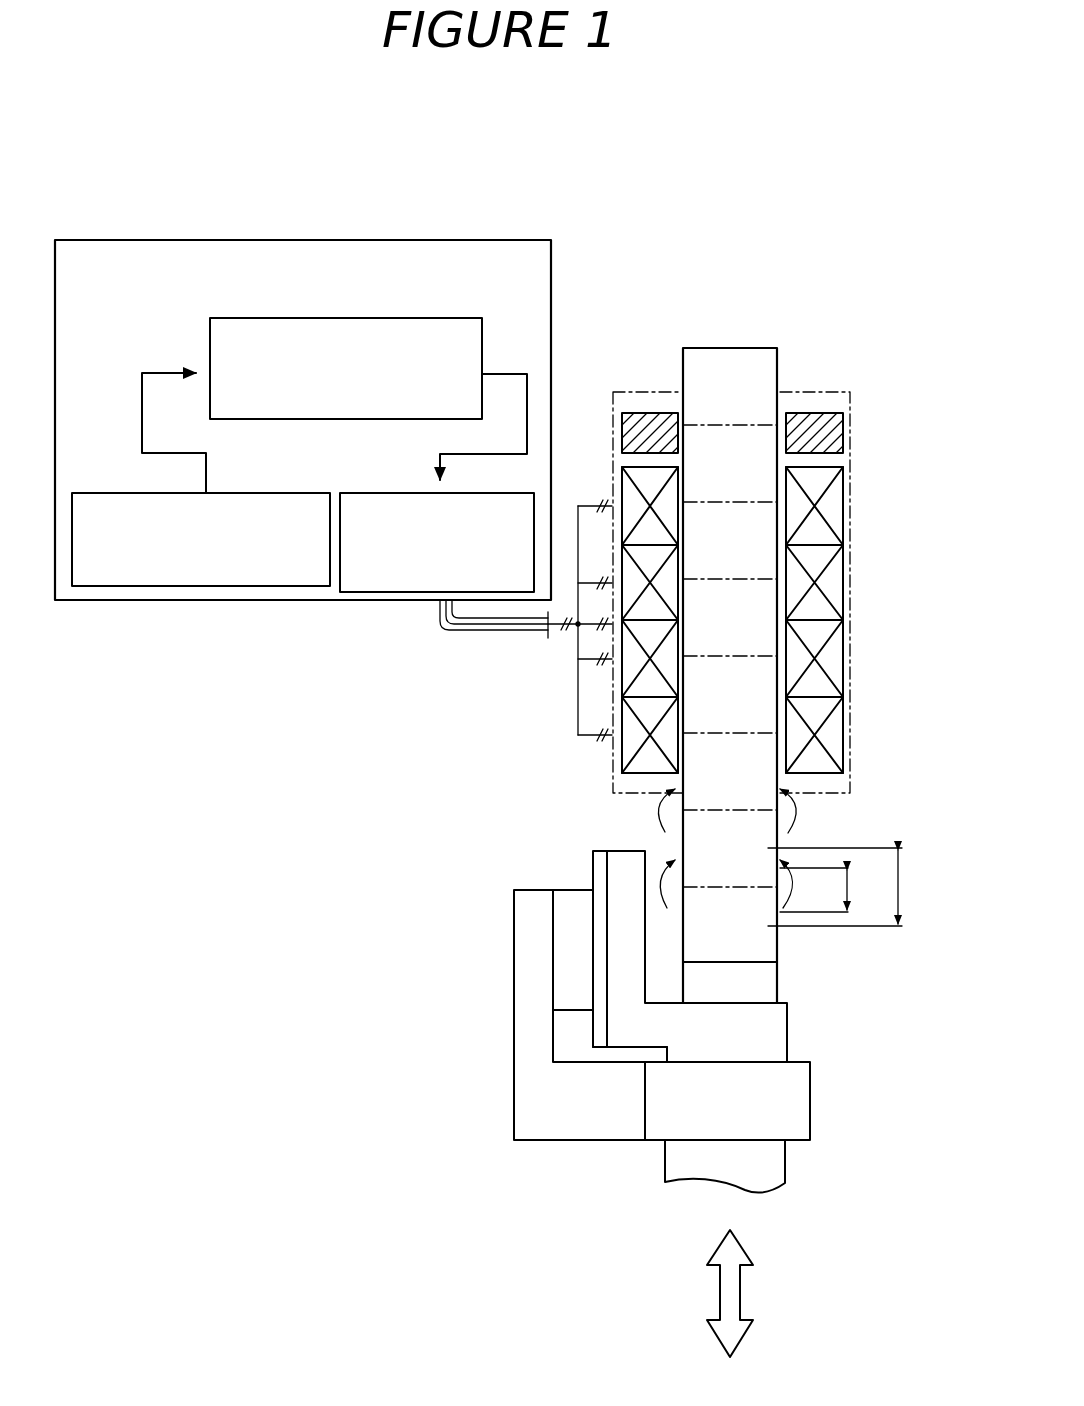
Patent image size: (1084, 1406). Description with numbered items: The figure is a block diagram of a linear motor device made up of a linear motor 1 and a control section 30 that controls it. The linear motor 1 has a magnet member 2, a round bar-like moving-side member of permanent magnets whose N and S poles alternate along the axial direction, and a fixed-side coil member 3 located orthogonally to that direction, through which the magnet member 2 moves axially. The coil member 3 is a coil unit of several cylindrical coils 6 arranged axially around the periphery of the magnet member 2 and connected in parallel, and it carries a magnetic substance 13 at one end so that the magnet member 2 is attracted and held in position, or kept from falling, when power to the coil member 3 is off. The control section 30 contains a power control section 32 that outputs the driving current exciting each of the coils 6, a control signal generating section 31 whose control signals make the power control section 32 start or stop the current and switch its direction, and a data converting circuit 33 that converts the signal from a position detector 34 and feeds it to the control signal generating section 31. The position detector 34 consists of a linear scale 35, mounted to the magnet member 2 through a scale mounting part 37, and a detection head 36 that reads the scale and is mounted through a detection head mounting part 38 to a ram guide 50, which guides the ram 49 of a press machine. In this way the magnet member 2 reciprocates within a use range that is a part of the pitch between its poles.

The linear motor 1 is at (655, 346).
The magnet member 2 is at (800, 368).
The coil member 3 is at (864, 469).
The cylindrical coils 6 is at (835, 508).
The magnetic substance 13 is at (838, 435).
The control section 30 is at (270, 240).
The control signal generating section 31 is at (378, 318).
The power control section 32 is at (518, 493).
The data converting circuit 33 is at (108, 493).
The position detector 34 is at (477, 949).
The linear scale 35 is at (594, 867).
The detection head 36 is at (575, 937).
The scale mounting part 37 is at (625, 860).
The detection head mounting part 38 is at (537, 1112).
The ram 49 is at (770, 1158).
The ram guide 50 is at (659, 1114).